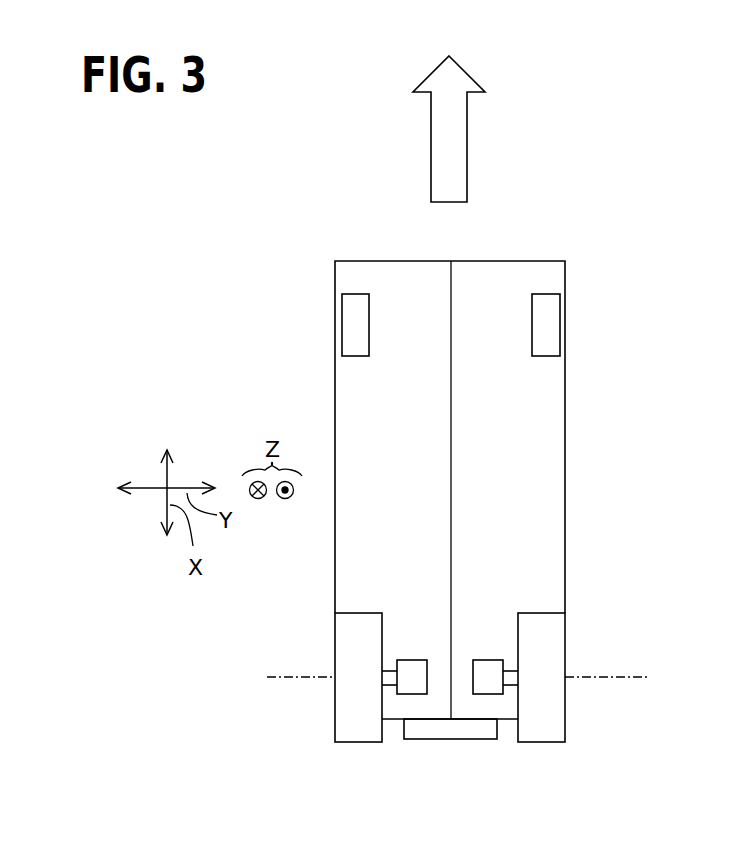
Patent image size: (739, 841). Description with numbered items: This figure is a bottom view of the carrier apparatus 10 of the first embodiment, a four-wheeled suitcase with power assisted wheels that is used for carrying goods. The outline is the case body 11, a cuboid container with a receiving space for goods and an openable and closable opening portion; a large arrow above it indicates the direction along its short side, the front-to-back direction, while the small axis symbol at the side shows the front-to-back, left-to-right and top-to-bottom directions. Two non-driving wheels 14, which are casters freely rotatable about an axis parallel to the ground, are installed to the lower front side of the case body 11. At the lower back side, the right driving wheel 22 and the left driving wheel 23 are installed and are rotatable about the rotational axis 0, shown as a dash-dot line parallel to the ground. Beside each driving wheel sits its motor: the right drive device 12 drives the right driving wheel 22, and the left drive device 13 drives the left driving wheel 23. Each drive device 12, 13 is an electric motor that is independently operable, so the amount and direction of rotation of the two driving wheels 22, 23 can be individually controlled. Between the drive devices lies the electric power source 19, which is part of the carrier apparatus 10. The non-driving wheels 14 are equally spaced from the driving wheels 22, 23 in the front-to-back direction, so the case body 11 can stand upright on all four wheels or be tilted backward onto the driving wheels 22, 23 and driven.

The carrier apparatus 10 is at (467, 508).
The case body 11 is at (565, 492).
The right drive device 12 is at (498, 694).
The left drive device 13 is at (405, 694).
The non-driving wheels 14 is at (356, 294).
The electric power source 19 is at (452, 739).
The right driving wheel 22 is at (545, 742).
The left driving wheel 23 is at (355, 742).
The rotational axis 0 is at (619, 678).